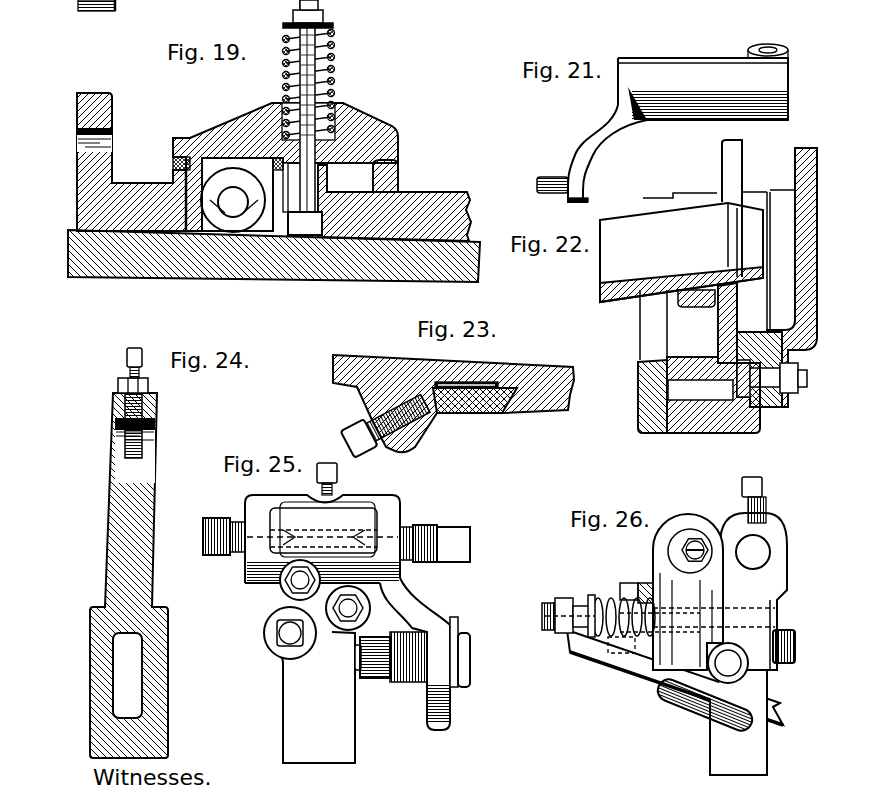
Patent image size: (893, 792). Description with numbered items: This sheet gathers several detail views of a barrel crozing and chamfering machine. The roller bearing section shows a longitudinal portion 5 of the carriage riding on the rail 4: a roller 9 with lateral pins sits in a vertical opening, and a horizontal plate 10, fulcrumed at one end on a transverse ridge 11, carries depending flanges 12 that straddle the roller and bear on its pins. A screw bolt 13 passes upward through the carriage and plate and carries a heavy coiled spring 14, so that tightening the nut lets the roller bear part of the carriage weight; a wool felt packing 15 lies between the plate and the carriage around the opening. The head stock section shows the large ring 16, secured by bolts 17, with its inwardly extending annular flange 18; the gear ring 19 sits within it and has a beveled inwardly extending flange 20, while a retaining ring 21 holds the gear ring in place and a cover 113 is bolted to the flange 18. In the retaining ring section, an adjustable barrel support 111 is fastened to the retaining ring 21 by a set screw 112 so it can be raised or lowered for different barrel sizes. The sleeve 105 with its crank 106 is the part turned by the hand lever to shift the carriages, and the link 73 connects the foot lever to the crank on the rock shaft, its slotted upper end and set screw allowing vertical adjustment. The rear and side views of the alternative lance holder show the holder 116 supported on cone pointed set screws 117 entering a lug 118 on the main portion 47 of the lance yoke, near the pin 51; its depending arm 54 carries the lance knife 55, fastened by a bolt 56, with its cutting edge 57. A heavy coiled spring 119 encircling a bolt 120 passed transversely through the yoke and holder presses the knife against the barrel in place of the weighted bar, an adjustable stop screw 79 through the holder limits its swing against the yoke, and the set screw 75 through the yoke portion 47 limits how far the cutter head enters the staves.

In FIG. 19, the rail 4 is at (307, 267).
In FIG. 19, the longitudinal portion of the carriage 5 is at (417, 212).
In FIG. 19, the roller 9 is at (233, 200).
In FIG. 19, the horizontal plate 10 is at (345, 137).
In FIG. 19, the transverse ridge 11 is at (398, 173).
In FIG. 19, the depending flanges 12 is at (272, 199).
In FIG. 19, the screw bolt 13 is at (307, 82).
In FIG. 19, the coiled spring 14 is at (335, 45).
In FIG. 19, the packing 15 is at (173, 161).
In FIG. 22, the ring 16 is at (683, 430).
In FIG. 25, the bolts 17 is at (213, 530).
In FIG. 22, the annular flange 18 is at (750, 332).
In FIG. 22, the gear ring 19 is at (677, 325).
In FIG. 22, the inwardly extending flange 20 is at (718, 330).
In FIG. 22, the retaining ring 21 is at (638, 373).
In FIG. 23, the retaining ring 21 is at (537, 368).
In FIG. 25, the main portion of the lance yoke 47 is at (315, 697).
In FIG. 26, the main portion of the lance yoke 47 is at (738, 684).
In FIG. 25, the pin 51 is at (453, 544).
In FIG. 26, the pin 51 is at (753, 573).
In FIG. 25, the depending arm 54 is at (418, 602).
In FIG. 26, the depending arm 54 is at (677, 700).
In FIG. 25, the lance knife 55 is at (460, 625).
In FIG. 26, the lance knife 55 is at (633, 670).
In FIG. 25, the bolt 56 is at (468, 652).
In FIG. 26, the bolt 56 is at (753, 670).
In FIG. 26, the cutting edge 57 is at (774, 707).
In FIG. 24, the link 73 is at (123, 553).
In FIG. 25, the set screw 75 is at (282, 632).
In FIG. 26, the set screw 75 is at (794, 638).
In FIG. 25, the adjustable stop screw 79 is at (262, 586).
In FIG. 26, the adjustable stop screw 79 is at (625, 585).
In FIG. 21, the sleeve 105 is at (703, 82).
In FIG. 21, the crank 106 is at (592, 153).
In FIG. 23, the barrel supports 111 is at (472, 408).
In FIG. 23, the set screws 112 is at (415, 433).
In FIG. 22, the cover 113 is at (760, 219).
In FIG. 25, the lance holder 116 is at (395, 512).
In FIG. 26, the lance holder 116 is at (660, 568).
In FIG. 25, the cone pointed set screws 117 is at (433, 535).
In FIG. 26, the cone pointed set screws 117 is at (690, 542).
In FIG. 25, the lug 118 is at (348, 530).
In FIG. 26, the lug 118 is at (698, 528).
In FIG. 26, the coiled spring 119 is at (600, 598).
In FIG. 25, the bolt 120 is at (362, 612).
In FIG. 26, the bolt 120 is at (548, 604).